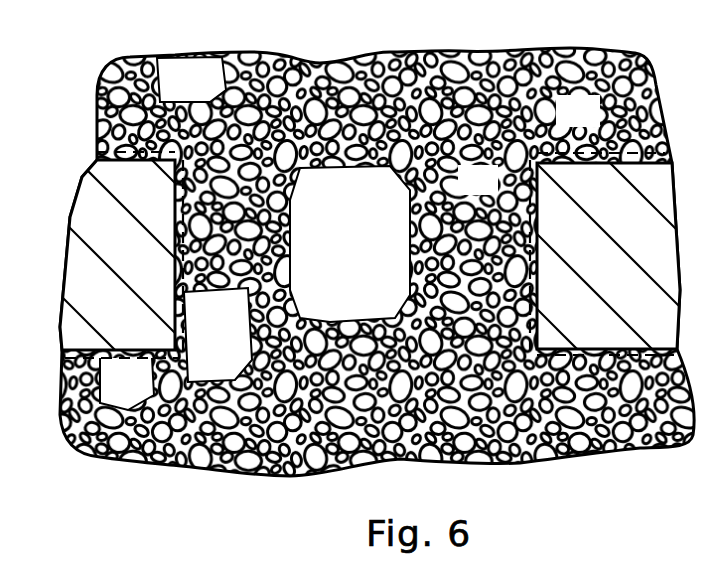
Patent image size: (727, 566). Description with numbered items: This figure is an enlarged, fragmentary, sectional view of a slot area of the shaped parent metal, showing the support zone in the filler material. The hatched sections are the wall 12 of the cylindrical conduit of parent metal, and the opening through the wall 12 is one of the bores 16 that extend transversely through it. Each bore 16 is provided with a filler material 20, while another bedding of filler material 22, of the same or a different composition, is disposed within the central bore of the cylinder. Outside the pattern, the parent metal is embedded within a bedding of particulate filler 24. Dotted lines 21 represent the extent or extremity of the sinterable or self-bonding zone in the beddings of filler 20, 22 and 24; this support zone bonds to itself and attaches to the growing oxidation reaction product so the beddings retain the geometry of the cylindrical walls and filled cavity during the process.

The wall 12 is at (663, 131).
The bores 16 is at (508, 177).
The filler material 20 is at (360, 267).
The dotted lines 21 is at (120, 150).
The bedding of filler material 22 is at (235, 428).
The bedding of particulate filler 24 is at (193, 97).